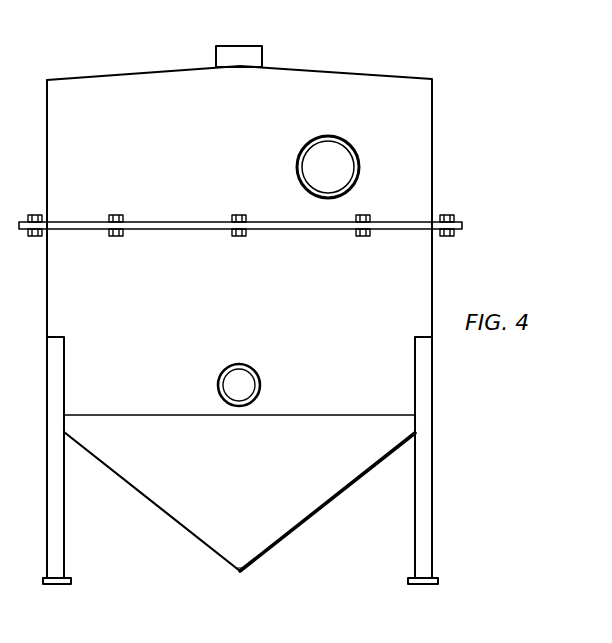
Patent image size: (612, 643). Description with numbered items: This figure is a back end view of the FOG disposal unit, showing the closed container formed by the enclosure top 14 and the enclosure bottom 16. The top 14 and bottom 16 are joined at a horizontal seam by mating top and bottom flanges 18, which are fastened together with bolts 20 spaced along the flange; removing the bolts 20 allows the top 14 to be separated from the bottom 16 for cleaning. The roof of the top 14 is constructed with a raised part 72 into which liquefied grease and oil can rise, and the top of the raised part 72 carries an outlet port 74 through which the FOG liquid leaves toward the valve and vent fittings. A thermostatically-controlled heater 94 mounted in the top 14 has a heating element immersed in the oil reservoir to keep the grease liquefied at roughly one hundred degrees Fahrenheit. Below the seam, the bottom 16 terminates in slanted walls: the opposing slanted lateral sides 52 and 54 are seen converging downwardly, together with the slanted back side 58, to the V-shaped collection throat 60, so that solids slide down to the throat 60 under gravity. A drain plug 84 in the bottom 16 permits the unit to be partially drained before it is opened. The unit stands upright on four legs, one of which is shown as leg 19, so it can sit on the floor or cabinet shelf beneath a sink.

The top 14 is at (432, 138).
The bottom 16 is at (432, 393).
The flanges 18 is at (462, 225).
The leg 19 is at (432, 493).
The bolts 20 is at (447, 214).
The slanted lateral side 52 is at (150, 500).
The slanted lateral side 54 is at (330, 502).
The slanted back side 58 is at (290, 515).
The V-shaped collection throat 60 is at (240, 573).
The raised part 72 is at (115, 78).
The outlet port 74 is at (262, 58).
The drain plug 84 is at (261, 385).
The thermostatically-controlled heater 94 is at (355, 152).